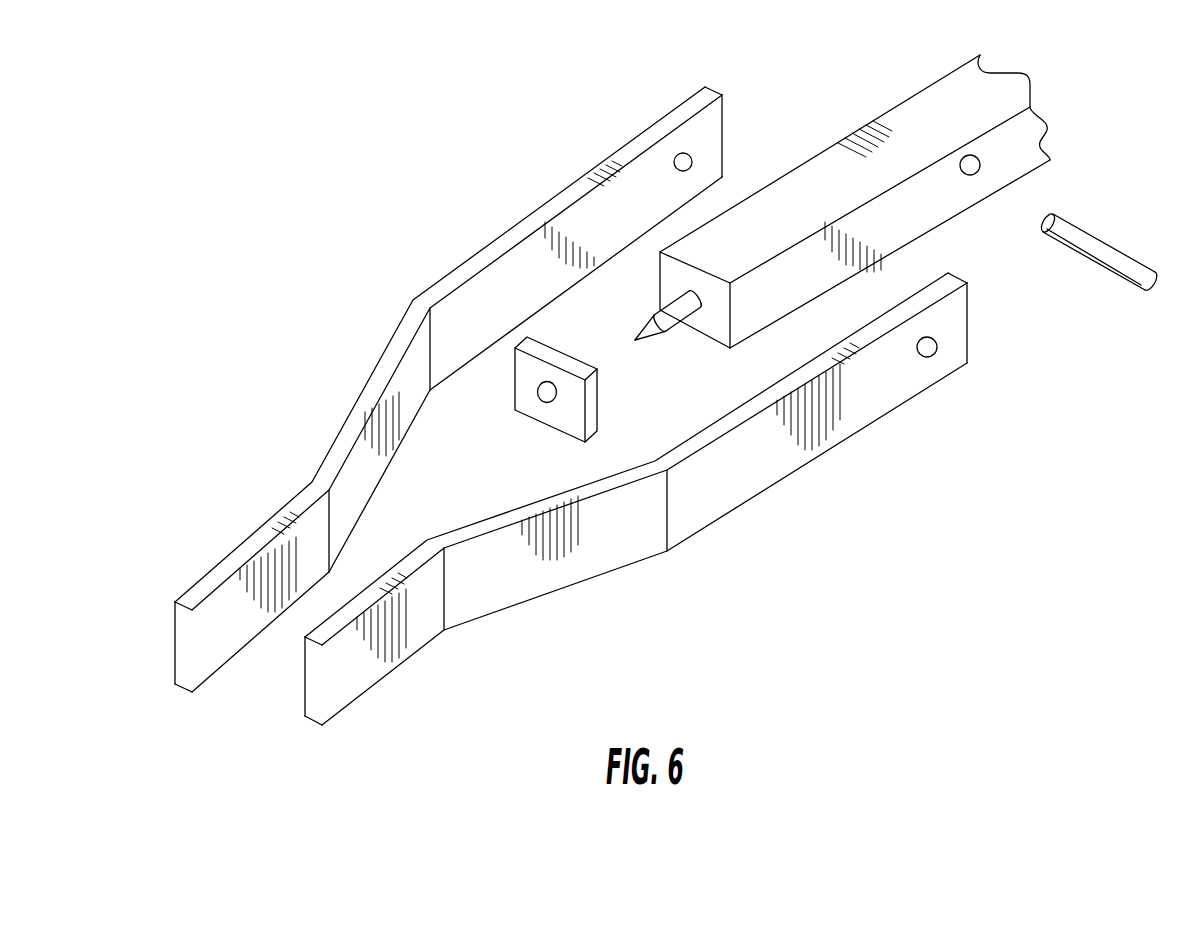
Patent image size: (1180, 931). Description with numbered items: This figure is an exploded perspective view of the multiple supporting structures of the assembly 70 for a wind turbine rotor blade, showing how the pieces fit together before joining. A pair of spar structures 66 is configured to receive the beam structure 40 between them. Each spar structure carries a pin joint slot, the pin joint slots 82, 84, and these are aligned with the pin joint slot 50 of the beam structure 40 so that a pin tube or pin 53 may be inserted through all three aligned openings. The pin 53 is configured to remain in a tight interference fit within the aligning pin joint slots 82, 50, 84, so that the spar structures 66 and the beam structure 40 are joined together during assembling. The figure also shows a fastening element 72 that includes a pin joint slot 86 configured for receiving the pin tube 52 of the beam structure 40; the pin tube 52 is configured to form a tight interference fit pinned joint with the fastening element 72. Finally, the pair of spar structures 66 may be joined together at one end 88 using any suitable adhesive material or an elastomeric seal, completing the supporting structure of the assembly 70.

The beam structure 40 is at (920, 102).
The pin joint slot 50 is at (970, 167).
The pin tube 52 is at (648, 340).
The pin 53 is at (1077, 237).
The spar structures 66 is at (417, 307).
The assembly 70 is at (320, 158).
The fastening element 72 is at (578, 367).
The pin joint slot 82 is at (927, 348).
The pin joint slot 84 is at (682, 158).
The pin joint slot 86 is at (562, 417).
The end 88 is at (230, 688).